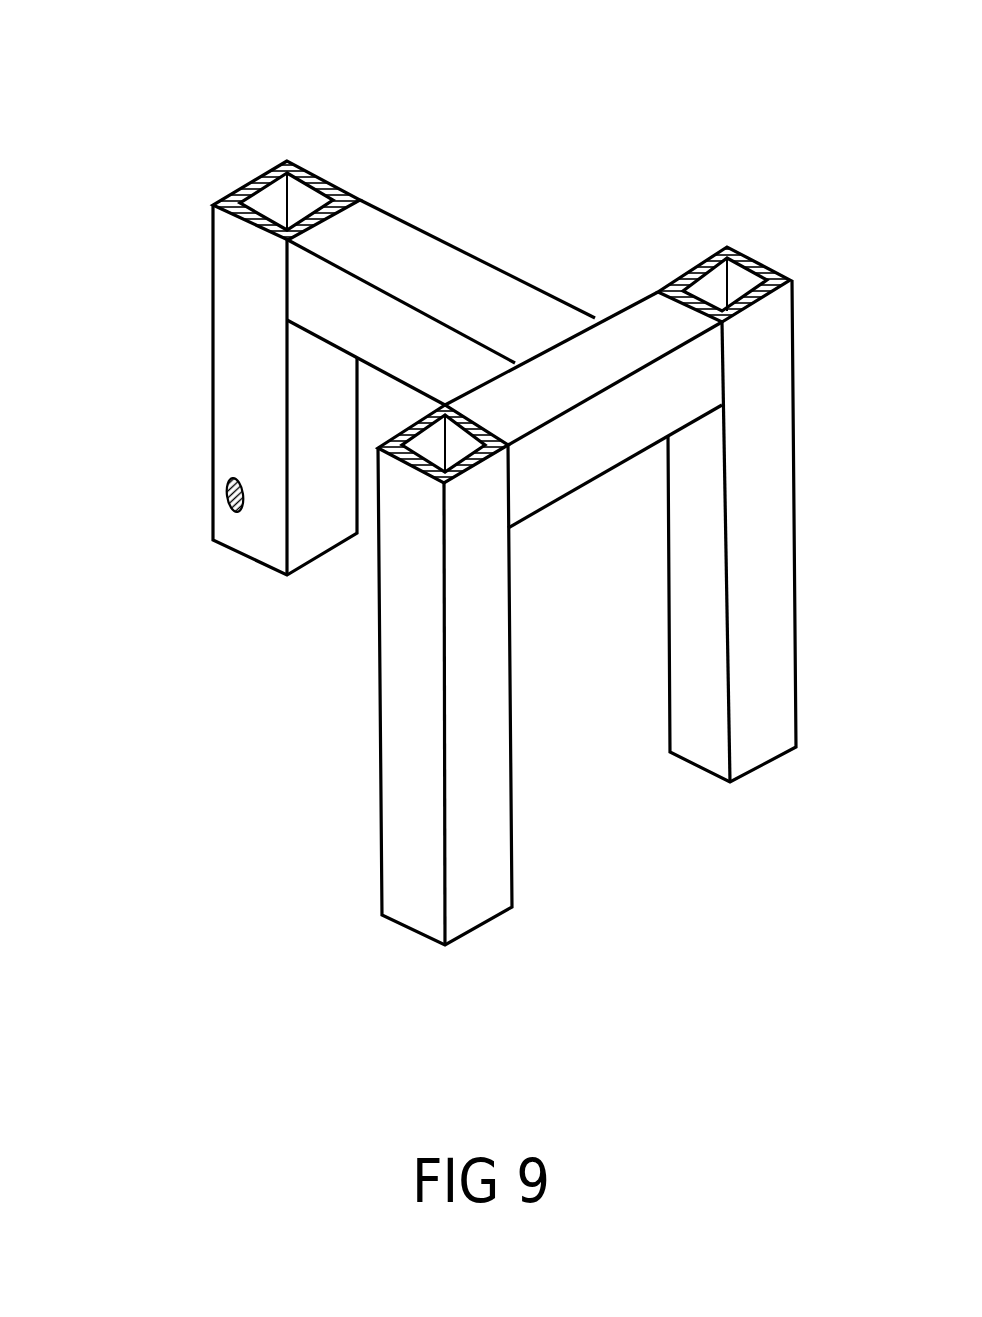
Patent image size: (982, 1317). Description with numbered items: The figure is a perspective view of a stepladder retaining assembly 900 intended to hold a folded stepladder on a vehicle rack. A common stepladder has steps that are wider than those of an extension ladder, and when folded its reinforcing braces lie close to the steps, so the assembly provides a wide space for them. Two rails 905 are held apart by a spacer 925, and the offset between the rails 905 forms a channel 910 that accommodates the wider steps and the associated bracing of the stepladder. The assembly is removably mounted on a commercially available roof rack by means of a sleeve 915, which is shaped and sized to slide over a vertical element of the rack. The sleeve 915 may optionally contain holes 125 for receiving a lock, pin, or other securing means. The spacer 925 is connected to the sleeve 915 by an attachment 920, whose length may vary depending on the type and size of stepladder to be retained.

The stepladder retaining assembly 900 is at (476, 208).
The rails 905 is at (422, 757).
The channel 910 is at (600, 722).
The sleeve 915 is at (225, 332).
The attachment 920 is at (494, 297).
The spacer 925 is at (655, 403).
The holes 125 is at (227, 490).